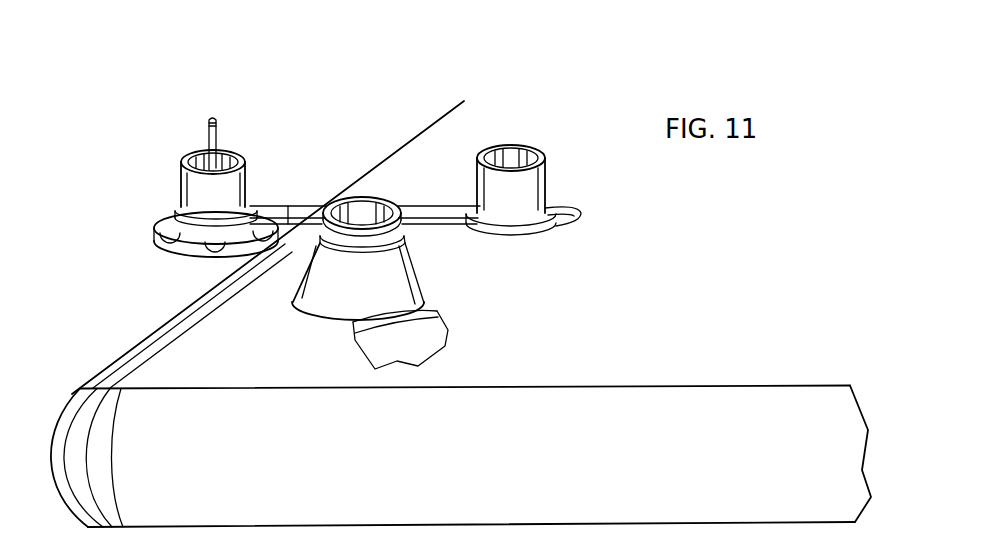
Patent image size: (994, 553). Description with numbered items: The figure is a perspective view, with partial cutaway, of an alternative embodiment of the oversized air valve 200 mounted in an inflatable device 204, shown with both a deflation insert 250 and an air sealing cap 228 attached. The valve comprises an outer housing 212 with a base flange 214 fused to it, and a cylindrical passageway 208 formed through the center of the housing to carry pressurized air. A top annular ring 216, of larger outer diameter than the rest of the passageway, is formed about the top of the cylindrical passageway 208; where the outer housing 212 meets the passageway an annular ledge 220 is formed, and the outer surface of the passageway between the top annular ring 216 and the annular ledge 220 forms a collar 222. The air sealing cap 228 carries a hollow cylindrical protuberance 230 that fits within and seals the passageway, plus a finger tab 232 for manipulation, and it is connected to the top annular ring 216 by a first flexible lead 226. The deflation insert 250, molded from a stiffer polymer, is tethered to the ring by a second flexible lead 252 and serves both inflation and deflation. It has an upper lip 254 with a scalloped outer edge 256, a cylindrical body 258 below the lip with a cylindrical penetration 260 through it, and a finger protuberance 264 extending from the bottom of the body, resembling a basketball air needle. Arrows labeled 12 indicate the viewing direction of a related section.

The direction of view / reference arrow 12 is at (65, 173).
The oversized air valve 200 is at (352, 137).
The inflatable device 204 is at (73, 396).
The cylindrical passageway 208 is at (362, 213).
The outer housing 212 is at (318, 305).
The base flange 214 is at (420, 332).
The top annular ring 216 is at (352, 198).
The annular ledge 220 is at (402, 237).
The collar 222 is at (425, 300).
The first flexible lead 226 is at (438, 202).
The air sealing cap 228 is at (543, 203).
The hollow cylindrical protuberance 230 is at (526, 170).
The finger tab 232 is at (560, 227).
The deflation insert 250 is at (178, 149).
The second flexible lead 252 is at (292, 213).
The upper lip 254 is at (195, 255).
The scalloped outer edge 256 is at (168, 242).
The cylindrical body 258 is at (180, 192).
The cylindrical penetration 260 is at (198, 150).
The finger protuberance 264 is at (220, 138).